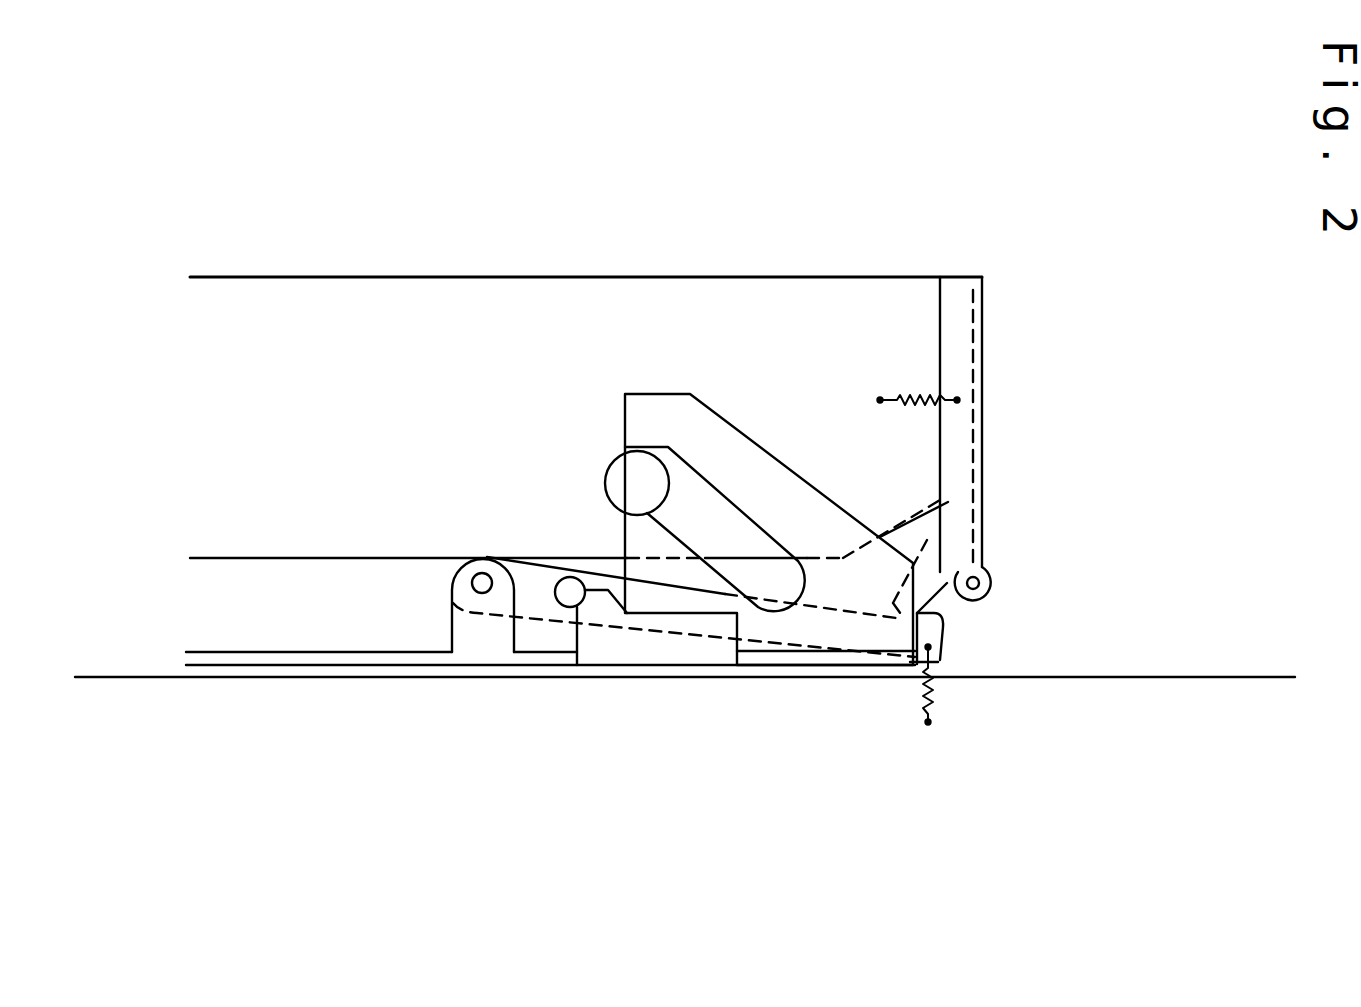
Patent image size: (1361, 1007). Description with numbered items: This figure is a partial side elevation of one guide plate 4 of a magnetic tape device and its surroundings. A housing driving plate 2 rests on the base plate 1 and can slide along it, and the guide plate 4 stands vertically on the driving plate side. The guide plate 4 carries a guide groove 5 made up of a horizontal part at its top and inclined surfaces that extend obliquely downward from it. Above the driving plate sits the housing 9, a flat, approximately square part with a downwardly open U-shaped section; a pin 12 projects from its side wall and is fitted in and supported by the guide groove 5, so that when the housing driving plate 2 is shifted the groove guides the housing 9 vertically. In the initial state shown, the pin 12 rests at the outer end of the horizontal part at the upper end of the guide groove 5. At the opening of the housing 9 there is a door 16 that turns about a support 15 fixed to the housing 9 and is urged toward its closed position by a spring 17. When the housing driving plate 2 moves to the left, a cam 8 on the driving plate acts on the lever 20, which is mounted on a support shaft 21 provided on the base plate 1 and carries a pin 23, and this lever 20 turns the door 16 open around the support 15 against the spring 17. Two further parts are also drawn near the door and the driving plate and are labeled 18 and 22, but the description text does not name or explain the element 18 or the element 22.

The base plate 1 is at (1203, 675).
The housing driving plate 2 is at (432, 658).
The guide plate 4 is at (763, 470).
The guide groove 5 is at (727, 547).
The cam 8 is at (598, 607).
The housing 9 is at (680, 277).
The pin 12 is at (615, 478).
The support 15 is at (987, 593).
The door 16 is at (982, 453).
The spring 17 is at (907, 390).
The pawl 18 is at (928, 577).
The lever 20 is at (798, 640).
The support shaft 21 is at (484, 574).
The stop 22 is at (945, 640).
The pin 23 is at (560, 606).